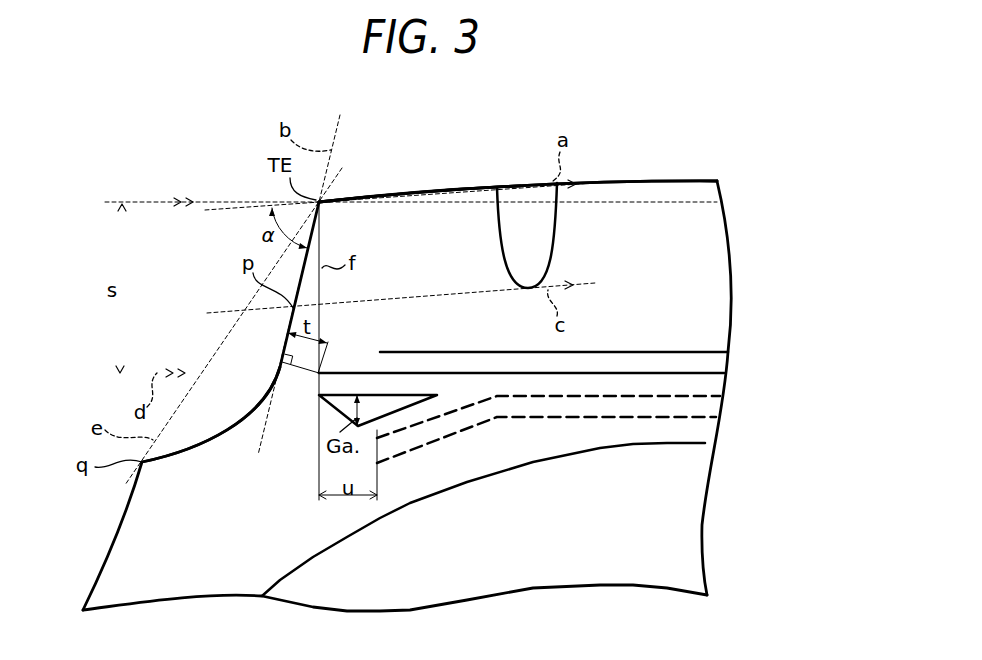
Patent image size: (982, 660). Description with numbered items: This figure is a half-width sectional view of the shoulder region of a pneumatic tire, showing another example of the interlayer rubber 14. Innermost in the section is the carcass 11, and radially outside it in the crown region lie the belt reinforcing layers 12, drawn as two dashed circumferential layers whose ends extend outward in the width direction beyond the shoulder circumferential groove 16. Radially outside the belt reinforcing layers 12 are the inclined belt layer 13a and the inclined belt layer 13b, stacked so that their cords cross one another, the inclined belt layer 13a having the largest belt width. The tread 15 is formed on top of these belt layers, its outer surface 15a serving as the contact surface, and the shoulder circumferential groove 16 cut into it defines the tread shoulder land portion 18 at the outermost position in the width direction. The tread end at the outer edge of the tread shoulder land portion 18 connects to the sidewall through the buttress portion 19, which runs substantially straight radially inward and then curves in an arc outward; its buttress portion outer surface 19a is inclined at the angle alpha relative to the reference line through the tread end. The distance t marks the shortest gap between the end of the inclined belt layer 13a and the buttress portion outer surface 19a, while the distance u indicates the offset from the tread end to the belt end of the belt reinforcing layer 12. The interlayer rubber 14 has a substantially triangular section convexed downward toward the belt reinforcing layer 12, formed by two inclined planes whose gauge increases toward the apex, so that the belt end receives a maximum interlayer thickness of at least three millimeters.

The carcass 11 is at (703, 443).
The belt reinforcing layer 12 is at (722, 394).
The inclined belt layer 13a is at (727, 372).
The inclined belt layer 13b is at (730, 347).
The interlayer rubber 14 is at (342, 405).
The tread 15 is at (692, 247).
The rake face 15a is at (662, 181).
The shoulder circumferential groove 16 is at (523, 232).
The tread shoulder land portion 18 is at (431, 228).
The buttress portion 19 is at (233, 292).
The buttress portion outer surface 19a is at (290, 333).